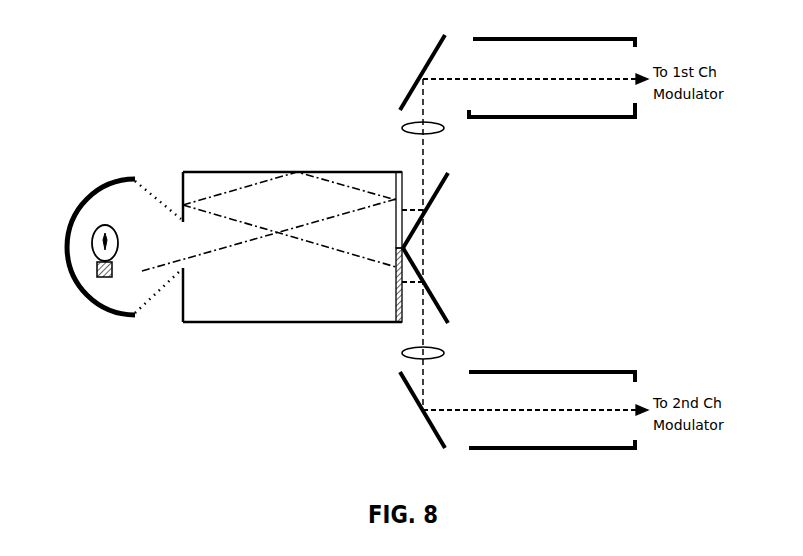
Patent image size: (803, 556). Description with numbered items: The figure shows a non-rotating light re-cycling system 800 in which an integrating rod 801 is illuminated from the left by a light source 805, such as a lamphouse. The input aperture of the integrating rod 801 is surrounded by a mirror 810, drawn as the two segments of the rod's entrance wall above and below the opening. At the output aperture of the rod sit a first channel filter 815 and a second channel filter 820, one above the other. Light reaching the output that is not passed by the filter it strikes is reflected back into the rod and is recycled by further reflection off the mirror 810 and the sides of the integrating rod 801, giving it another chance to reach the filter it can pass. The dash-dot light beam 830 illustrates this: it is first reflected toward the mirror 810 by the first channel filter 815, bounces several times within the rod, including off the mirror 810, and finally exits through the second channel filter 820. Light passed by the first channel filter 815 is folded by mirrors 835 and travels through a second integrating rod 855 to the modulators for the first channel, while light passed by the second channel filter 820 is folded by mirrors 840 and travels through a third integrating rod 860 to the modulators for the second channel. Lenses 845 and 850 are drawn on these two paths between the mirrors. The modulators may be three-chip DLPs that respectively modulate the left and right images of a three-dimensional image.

The non-rotating light re-cycling system 800 is at (184, 423).
The integrating rod 801 is at (242, 171).
The light source 805 is at (123, 180).
The mirror 810 is at (183, 185).
The first channel filter 815 is at (399, 171).
The second channel filter 820 is at (399, 323).
The light beam 830 is at (332, 253).
The mirrors 835 is at (405, 100).
The mirrors 840 is at (437, 293).
The first relay lens 845 is at (427, 156).
The second relay lens 850 is at (427, 334).
The second integrating rod 855 is at (607, 38).
The third integrating rod 860 is at (607, 449).